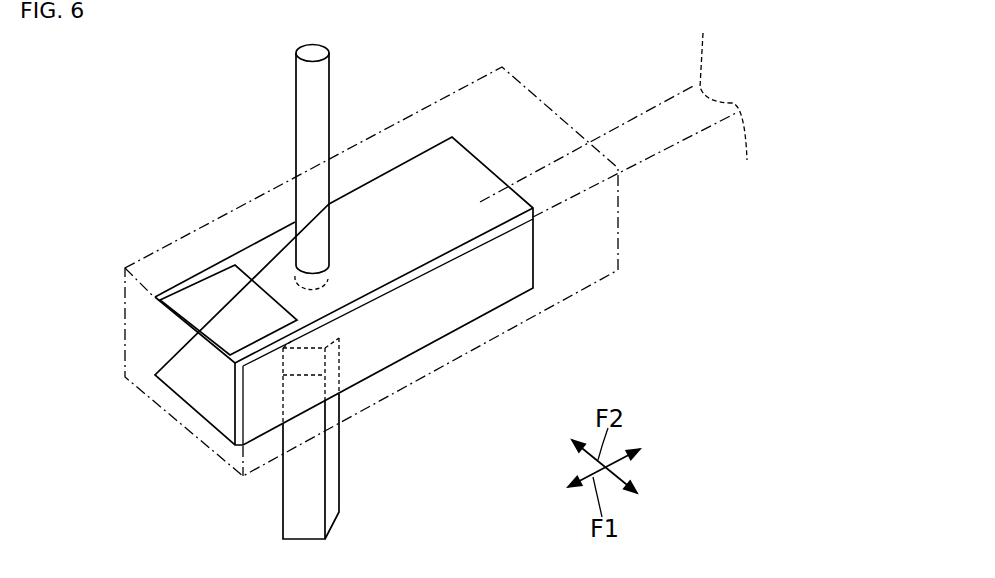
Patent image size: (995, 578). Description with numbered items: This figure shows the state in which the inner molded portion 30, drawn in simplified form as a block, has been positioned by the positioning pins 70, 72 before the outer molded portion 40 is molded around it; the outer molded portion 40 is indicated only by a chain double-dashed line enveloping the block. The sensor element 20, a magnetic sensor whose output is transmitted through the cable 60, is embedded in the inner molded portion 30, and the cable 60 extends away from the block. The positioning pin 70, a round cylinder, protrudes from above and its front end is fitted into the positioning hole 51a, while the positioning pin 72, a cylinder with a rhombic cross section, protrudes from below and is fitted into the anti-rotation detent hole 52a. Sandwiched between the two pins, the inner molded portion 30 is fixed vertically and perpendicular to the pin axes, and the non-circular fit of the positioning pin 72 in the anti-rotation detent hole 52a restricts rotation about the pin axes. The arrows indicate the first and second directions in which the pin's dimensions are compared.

The sensor element 20 is at (200, 297).
The inner molded portion 30 is at (438, 141).
The outer molded portion 40 is at (207, 222).
The positioning hole 51a is at (333, 272).
The anti-rotation detent hole 52a is at (339, 352).
The cable 60 is at (645, 110).
The positioning pin 70 is at (331, 92).
The positioning pin 72 is at (341, 496).